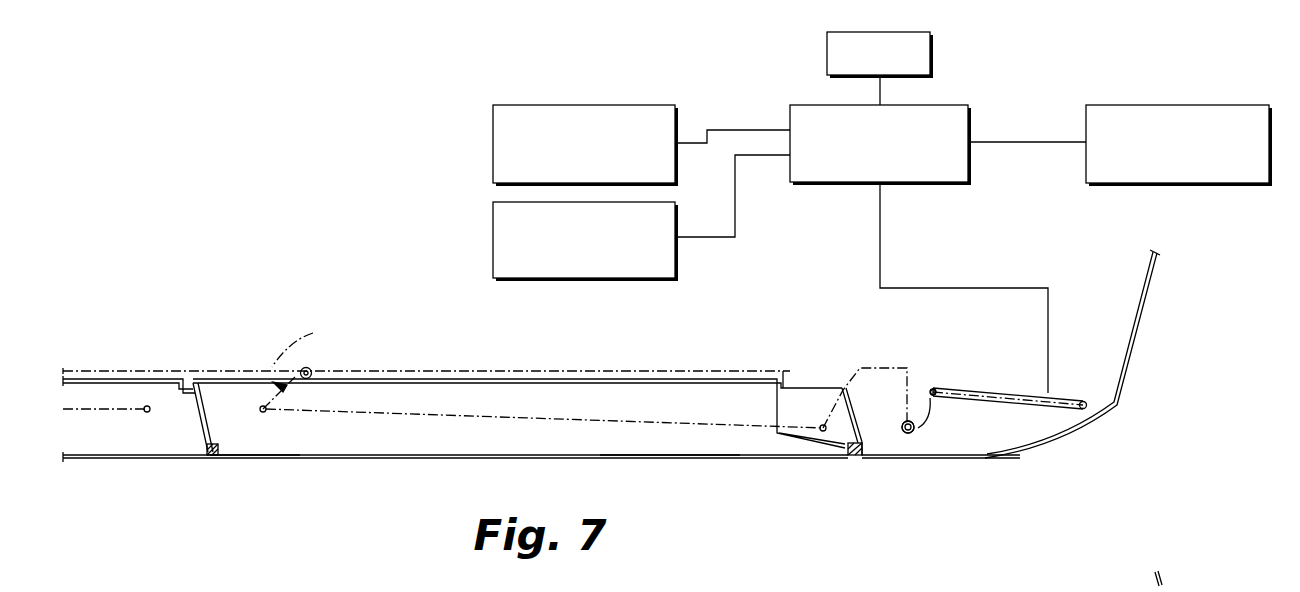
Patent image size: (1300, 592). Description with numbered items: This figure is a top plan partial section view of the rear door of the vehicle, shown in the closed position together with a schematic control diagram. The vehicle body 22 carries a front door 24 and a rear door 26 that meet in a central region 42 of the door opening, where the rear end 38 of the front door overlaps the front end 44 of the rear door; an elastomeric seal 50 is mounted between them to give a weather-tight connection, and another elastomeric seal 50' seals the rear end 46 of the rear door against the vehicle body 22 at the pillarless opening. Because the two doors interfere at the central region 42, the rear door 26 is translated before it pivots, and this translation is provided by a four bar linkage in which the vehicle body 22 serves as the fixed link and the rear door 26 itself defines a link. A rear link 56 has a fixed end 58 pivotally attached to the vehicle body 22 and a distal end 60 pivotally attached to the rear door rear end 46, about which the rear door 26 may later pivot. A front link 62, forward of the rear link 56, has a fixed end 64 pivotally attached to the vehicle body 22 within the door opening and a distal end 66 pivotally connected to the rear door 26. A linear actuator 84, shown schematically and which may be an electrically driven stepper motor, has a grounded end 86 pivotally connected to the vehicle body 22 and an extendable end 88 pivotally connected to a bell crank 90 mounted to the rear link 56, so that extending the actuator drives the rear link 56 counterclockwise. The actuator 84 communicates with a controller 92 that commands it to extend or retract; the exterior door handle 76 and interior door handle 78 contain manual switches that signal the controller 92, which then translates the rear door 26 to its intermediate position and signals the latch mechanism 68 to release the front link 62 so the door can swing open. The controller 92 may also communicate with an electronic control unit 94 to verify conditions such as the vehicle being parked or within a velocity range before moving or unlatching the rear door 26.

The vehicle body 22 is at (1037, 450).
The front door 24 is at (112, 462).
The rear door 26 is at (375, 462).
The rear end of the front door 38 is at (192, 460).
The central region 42 is at (185, 355).
The front end of the rear door 44 is at (235, 460).
The rear end of the rear door 46 is at (733, 460).
The elastomeric seal 50 is at (201, 486).
The elastomeric seal 50' is at (963, 509).
The rear link 56 is at (912, 363).
The fixed end of the rear link 58 is at (905, 433).
The distal end of the rear link 60 is at (823, 424).
The front link 62 is at (299, 337).
The fixed end of the front link 64 is at (311, 370).
The distal end of the front link 66 is at (263, 406).
The latch mechanism 68 is at (1178, 183).
The exterior door handle 76 is at (493, 143).
The interior door handle 78 is at (493, 240).
The linear actuator 84 is at (1007, 413).
The grounded end 86 is at (1103, 413).
The extendable end 88 is at (938, 397).
The bell crank 90 is at (927, 400).
The controller 92 is at (838, 183).
The electronic control unit (ECU) 94 is at (827, 52).